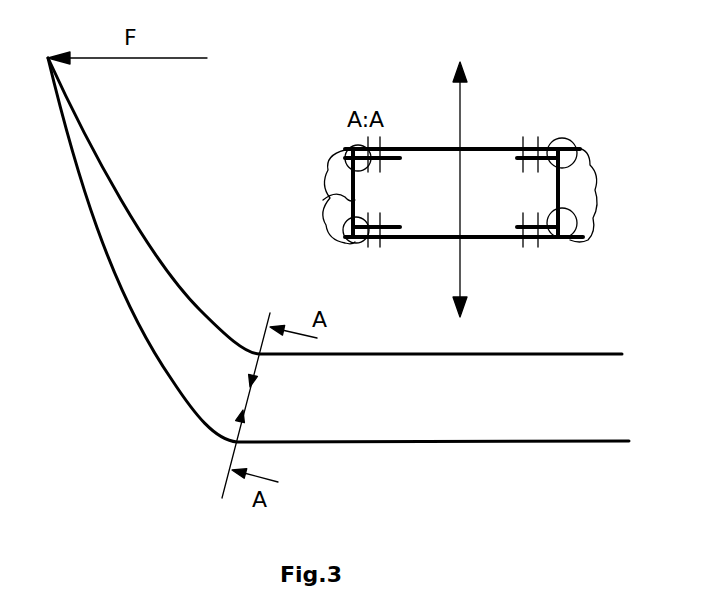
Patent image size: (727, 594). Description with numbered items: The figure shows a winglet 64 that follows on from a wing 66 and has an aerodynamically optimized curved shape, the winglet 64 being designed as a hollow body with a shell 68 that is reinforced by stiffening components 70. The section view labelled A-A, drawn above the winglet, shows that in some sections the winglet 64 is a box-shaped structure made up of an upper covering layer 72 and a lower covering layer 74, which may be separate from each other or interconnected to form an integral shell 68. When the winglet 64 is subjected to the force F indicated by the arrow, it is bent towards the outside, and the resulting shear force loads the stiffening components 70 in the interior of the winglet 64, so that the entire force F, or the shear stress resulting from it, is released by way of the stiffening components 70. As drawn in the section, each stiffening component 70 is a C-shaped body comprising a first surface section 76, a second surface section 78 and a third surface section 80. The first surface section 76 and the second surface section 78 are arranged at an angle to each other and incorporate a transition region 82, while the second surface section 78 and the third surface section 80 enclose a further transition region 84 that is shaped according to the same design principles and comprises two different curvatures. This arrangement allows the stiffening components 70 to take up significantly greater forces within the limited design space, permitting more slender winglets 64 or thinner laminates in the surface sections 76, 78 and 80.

The winglet 64 is at (338, 300).
The wing 66 is at (477, 427).
The shell 68 is at (185, 330).
The stiffening components 70 is at (355, 190).
The upper covering layer 72 is at (493, 149).
The lower covering layer 74 is at (482, 240).
The first surface section 76 is at (397, 248).
The second surface section 78 is at (318, 212).
The third surface section 80 is at (387, 147).
The transition region 82 is at (352, 238).
The further transition region 84 is at (350, 148).